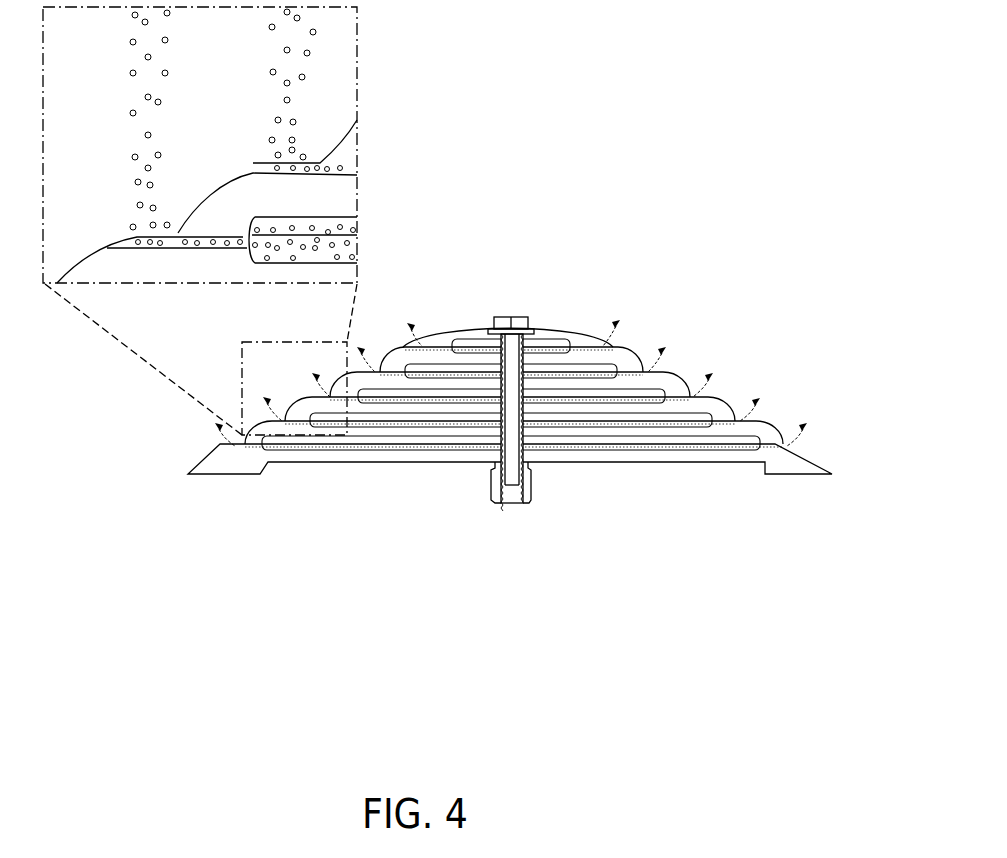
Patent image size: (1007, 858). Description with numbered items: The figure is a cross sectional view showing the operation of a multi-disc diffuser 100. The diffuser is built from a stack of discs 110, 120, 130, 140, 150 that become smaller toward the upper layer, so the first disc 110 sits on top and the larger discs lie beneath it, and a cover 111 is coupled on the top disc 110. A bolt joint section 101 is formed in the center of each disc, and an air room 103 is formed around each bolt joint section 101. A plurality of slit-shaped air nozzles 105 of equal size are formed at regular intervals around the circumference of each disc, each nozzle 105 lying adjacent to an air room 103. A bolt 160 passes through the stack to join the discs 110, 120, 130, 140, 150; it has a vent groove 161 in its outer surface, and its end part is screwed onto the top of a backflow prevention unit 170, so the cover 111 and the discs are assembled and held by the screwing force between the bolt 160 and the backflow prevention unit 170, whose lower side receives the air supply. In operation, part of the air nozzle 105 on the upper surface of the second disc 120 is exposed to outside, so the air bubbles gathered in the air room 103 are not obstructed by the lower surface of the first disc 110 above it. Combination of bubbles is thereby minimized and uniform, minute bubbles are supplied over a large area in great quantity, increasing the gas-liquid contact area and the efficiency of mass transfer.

The multi-disc diffuser 100 is at (522, 386).
The bolt joint section 101 is at (508, 285).
The air room 103 is at (278, 263).
The air nozzle 105 is at (163, 248).
The first disc 110 is at (628, 345).
The cover 111 is at (563, 329).
The second disc 120 is at (677, 373).
The third disc 130 is at (728, 400).
The fourth disc 140 is at (773, 425).
The fifth disc 150 is at (830, 468).
The bolt 160 is at (505, 317).
The vent groove 161 is at (529, 328).
The backflow prevention unit 170 is at (525, 485).